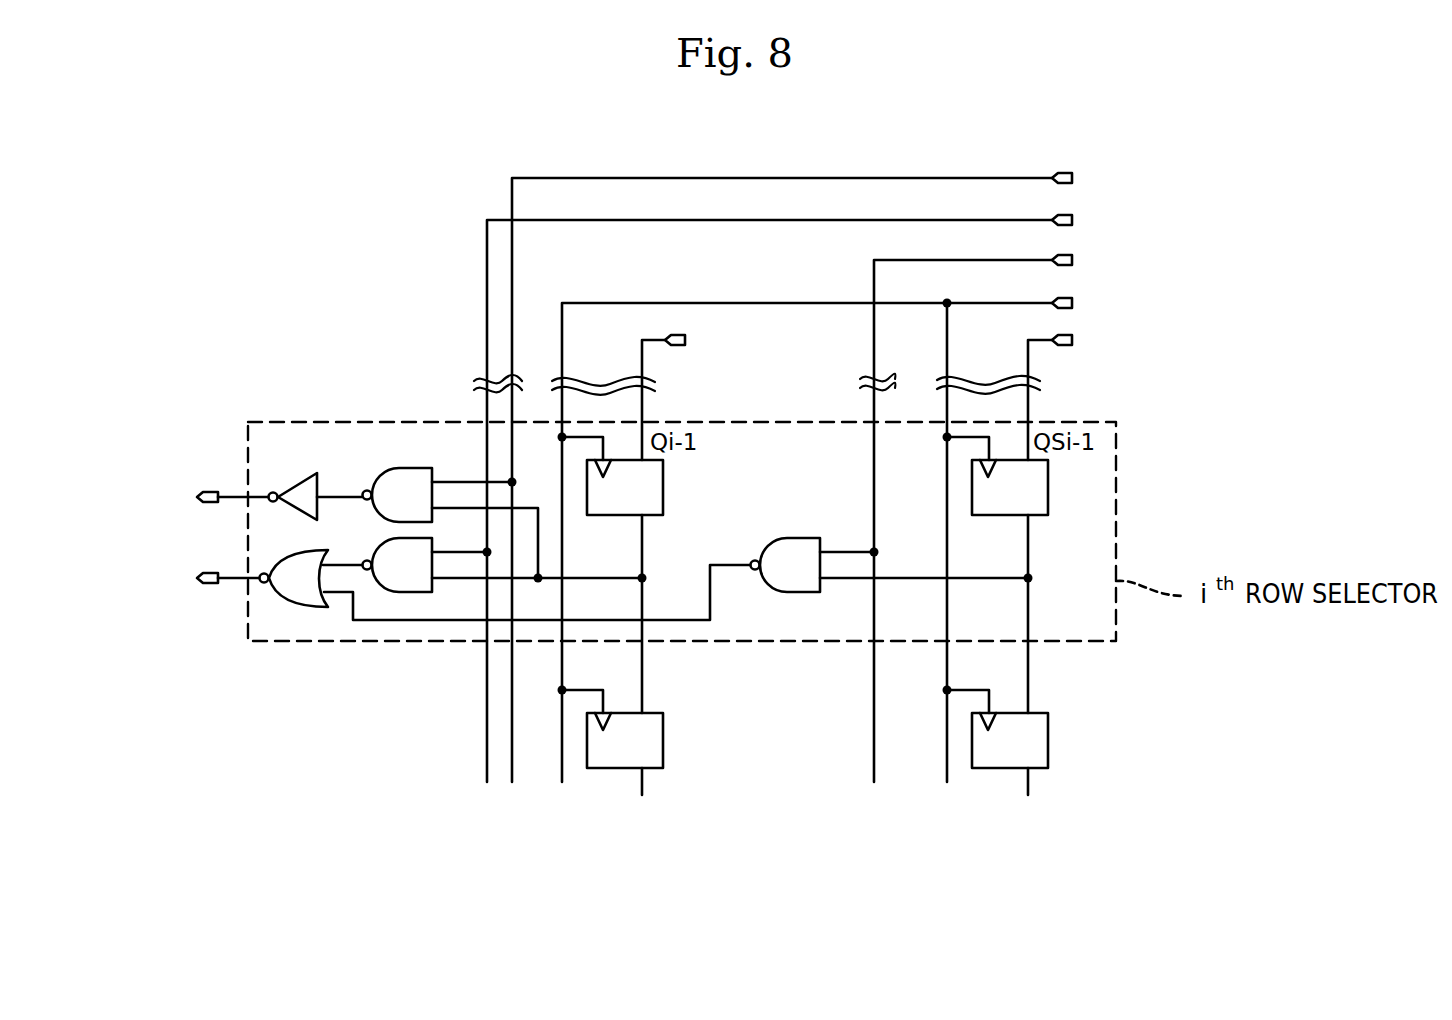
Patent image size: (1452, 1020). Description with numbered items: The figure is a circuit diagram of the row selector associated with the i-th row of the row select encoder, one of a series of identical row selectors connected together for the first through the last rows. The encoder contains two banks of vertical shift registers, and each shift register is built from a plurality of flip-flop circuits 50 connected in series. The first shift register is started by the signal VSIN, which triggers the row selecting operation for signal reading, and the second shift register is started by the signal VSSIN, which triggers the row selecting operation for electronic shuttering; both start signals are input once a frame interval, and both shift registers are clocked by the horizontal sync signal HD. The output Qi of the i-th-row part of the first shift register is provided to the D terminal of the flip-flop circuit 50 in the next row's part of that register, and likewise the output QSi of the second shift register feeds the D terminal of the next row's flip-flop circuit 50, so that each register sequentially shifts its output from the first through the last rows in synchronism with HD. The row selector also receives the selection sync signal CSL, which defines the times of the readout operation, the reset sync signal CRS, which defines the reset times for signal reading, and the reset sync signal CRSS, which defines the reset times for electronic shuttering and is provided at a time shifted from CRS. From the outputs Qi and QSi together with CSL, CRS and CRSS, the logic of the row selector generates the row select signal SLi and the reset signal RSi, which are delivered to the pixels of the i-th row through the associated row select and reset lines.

The flip-flop circuit 50 is at (663, 482).
The selection sync signal CSL is at (820, 472).
The reset sync signal CRS is at (810, 493).
The reset sync signal for electronic shuttering CRSS is at (1012, 513).
The horizontal sync signal HD is at (843, 535).
The start pulse signal for signal reading VSIN is at (699, 392).
The start pulse signal for electronic shuttering VSSIN is at (1093, 392).
The row select signal SLi is at (190, 497).
The reset signal RSi is at (185, 578).
The output of the first shift register Qi is at (658, 614).
The output of the second shift register QSi is at (1050, 614).